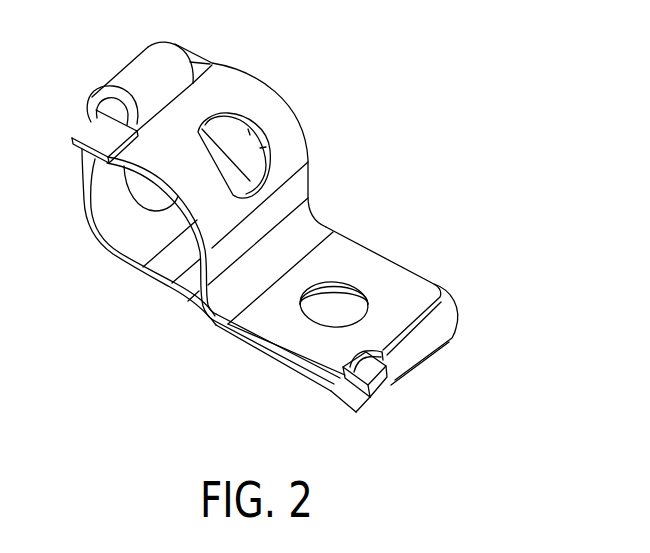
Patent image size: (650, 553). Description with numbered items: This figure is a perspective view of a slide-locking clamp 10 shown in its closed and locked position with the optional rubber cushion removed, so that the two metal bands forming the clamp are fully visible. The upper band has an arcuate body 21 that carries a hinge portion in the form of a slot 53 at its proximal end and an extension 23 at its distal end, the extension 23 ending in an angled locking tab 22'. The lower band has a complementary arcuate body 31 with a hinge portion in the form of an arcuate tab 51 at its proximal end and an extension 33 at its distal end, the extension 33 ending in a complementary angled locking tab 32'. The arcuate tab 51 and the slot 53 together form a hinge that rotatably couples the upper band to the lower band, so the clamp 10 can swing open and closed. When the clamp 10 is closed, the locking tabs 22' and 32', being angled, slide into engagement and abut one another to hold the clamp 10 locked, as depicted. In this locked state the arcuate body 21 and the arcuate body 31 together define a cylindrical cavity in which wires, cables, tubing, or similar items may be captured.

The clamp 10 is at (497, 72).
The arcuate body 21 is at (281, 128).
The extension 23 is at (365, 262).
The arcuate body 31 is at (123, 227).
The extension 33 is at (263, 355).
The arcuate tab 51 is at (145, 70).
The slot 53 is at (193, 82).
The locking tab 22' is at (362, 410).
The complementary locking tab 32' is at (396, 381).